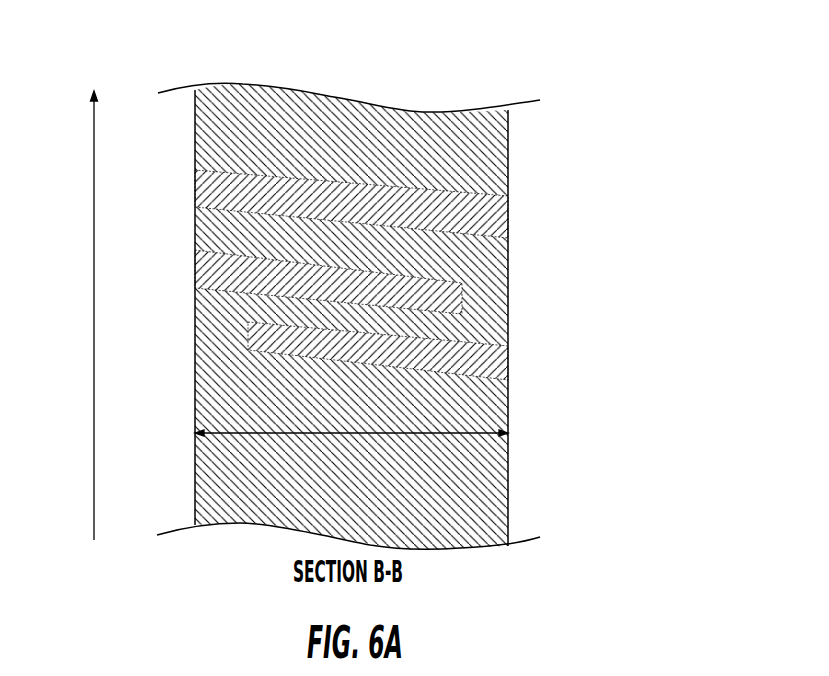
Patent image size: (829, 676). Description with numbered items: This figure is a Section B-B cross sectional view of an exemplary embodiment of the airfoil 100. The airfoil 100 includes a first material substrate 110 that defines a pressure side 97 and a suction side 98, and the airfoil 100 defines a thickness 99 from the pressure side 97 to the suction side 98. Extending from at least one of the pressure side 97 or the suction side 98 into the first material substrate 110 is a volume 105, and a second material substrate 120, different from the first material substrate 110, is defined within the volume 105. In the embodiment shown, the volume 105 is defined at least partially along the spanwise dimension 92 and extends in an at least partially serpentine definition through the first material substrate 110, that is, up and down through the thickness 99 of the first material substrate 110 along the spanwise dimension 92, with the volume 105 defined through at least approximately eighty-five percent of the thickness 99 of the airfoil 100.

The airfoil 100 is at (466, 84).
The first material substrate 110 is at (197, 140).
The second material substrate 120 is at (197, 278).
The volume 105 is at (508, 358).
The thickness 99 is at (480, 431).
The pressure side 97 is at (190, 488).
The suction side 98 is at (514, 497).
The spanwise dimension 92 is at (94, 325).